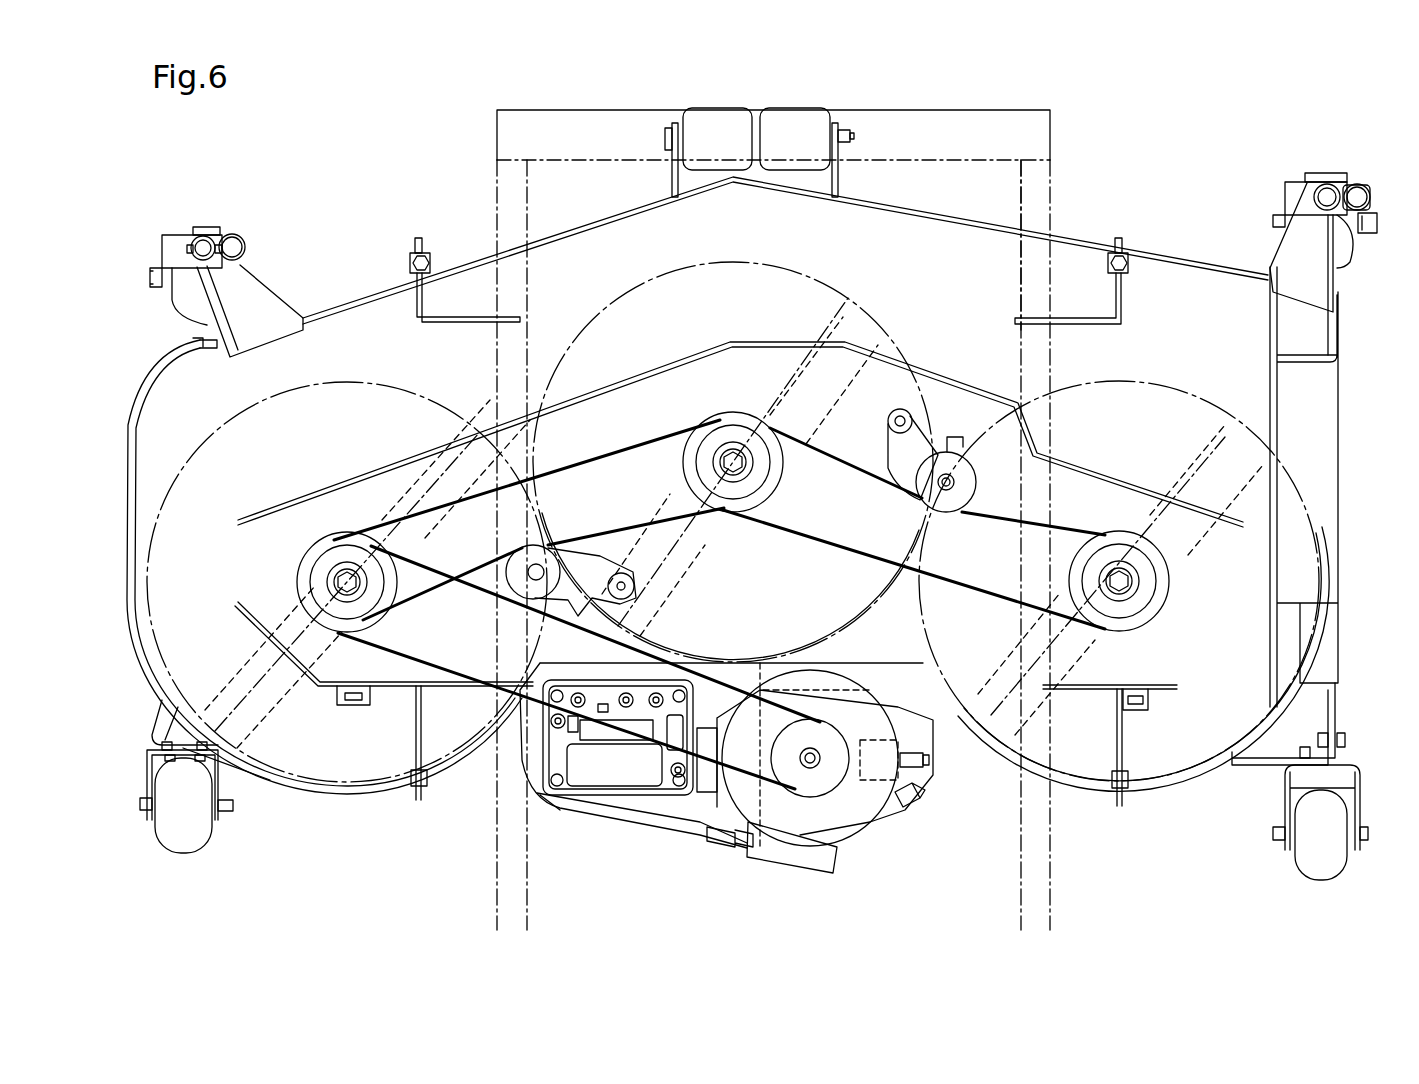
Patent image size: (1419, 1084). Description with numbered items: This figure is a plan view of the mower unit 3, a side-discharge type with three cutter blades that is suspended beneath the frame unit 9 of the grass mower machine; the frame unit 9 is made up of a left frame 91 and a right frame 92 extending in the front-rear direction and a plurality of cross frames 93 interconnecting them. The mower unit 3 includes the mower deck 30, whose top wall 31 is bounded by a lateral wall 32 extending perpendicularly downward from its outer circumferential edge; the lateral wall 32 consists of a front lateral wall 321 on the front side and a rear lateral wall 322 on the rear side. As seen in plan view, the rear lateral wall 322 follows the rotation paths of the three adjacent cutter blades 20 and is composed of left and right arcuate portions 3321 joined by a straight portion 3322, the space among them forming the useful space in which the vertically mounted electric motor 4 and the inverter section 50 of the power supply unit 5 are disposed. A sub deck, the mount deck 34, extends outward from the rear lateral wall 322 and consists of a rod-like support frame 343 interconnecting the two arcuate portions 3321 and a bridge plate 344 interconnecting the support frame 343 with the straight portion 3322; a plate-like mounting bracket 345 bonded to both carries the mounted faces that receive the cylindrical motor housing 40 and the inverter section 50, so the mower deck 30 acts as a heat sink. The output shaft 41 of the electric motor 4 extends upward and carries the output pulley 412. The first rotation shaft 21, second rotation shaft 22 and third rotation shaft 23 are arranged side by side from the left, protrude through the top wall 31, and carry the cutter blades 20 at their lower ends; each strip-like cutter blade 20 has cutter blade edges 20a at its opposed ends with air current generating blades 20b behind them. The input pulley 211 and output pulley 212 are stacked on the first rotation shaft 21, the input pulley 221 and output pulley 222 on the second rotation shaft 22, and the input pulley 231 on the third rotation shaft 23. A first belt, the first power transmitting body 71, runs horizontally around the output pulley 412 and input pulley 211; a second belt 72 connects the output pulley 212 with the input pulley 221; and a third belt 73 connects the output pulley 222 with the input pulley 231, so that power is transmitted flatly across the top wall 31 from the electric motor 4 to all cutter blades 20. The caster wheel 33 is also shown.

The mower unit 3 is at (228, 198).
The frame unit 9 is at (492, 130).
The cross frames 93 is at (1052, 123).
The left frame 91 is at (470, 260).
The right frame 92 is at (1050, 348).
The top wall 31 is at (1073, 253).
The mower deck 30 is at (1188, 248).
The lateral wall 32 is at (751, 544).
The front lateral wall 321 is at (330, 300).
The rear lateral wall 322 is at (386, 770).
The cutter blades 20 is at (360, 498).
The cutter blade edges 20a is at (230, 698).
The air current generating blades 20b is at (865, 343).
The first rotation shaft 21 is at (330, 580).
The input pulley 211 is at (723, 487).
The output pulley 212 is at (330, 526).
The second rotation shaft 22 is at (750, 468).
The input pulley 221 is at (719, 408).
The output pulley 222 is at (715, 398).
The third rotation shaft 23 is at (1130, 586).
The input pulley 231 is at (1085, 543).
The first power transmitting body 71 is at (452, 670).
The second power transmitting body 72 is at (550, 448).
The third power transmitting body 73 is at (870, 558).
The straight portion 3322 is at (728, 680).
The arcuate portions 3321 is at (340, 798).
The caster wheel 33 is at (186, 797).
The power supply unit 5 is at (564, 760).
The inverter section 50 is at (540, 738).
The mount deck 34 is at (676, 843).
The support frame 343 is at (590, 813).
The bridge plate 344 is at (688, 828).
The motor housing 40 is at (865, 688).
The electric motor 4 is at (845, 813).
The output shaft 41 is at (810, 783).
The output pulley 412 is at (880, 818).
The mounting bracket 345 is at (920, 793).